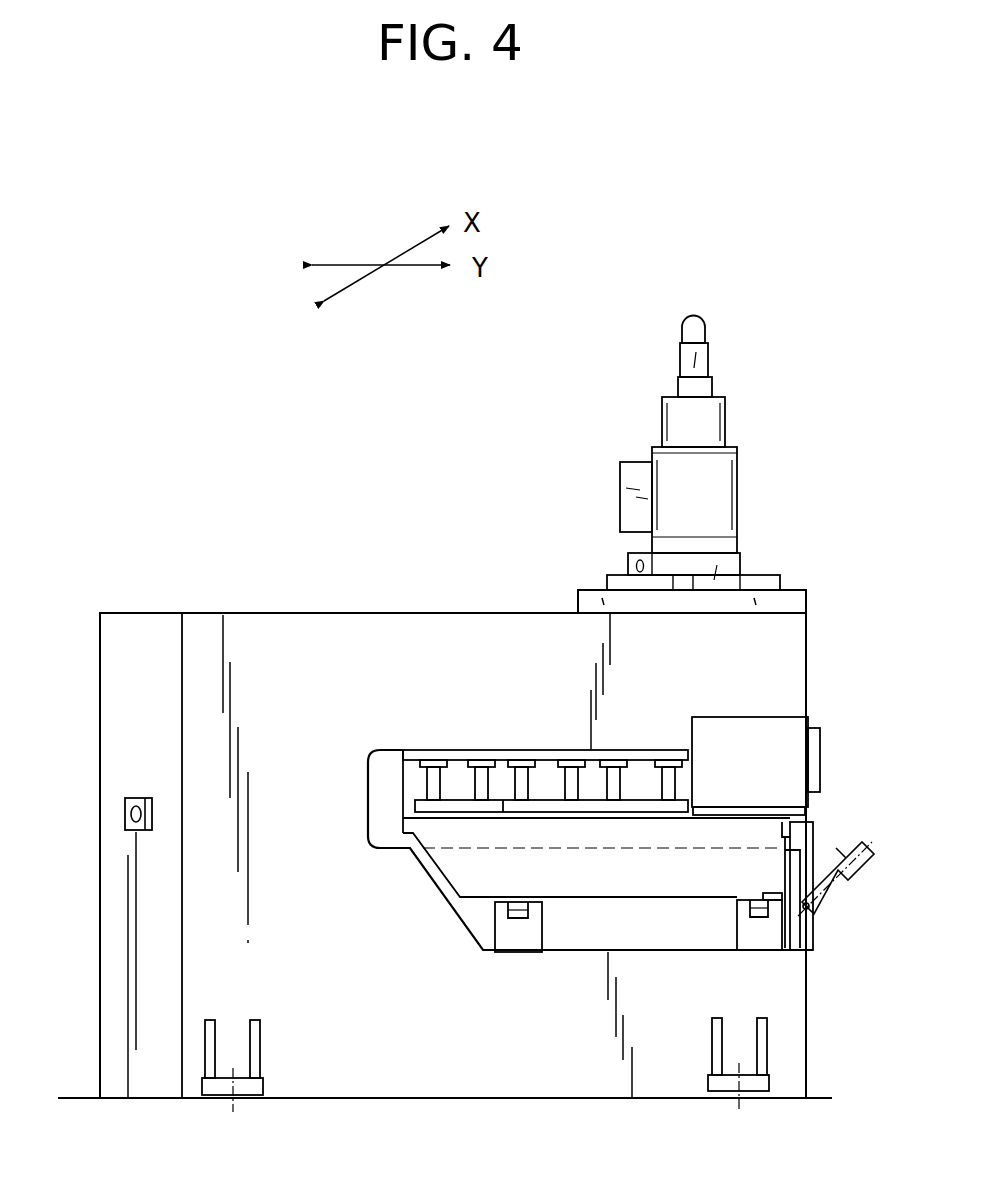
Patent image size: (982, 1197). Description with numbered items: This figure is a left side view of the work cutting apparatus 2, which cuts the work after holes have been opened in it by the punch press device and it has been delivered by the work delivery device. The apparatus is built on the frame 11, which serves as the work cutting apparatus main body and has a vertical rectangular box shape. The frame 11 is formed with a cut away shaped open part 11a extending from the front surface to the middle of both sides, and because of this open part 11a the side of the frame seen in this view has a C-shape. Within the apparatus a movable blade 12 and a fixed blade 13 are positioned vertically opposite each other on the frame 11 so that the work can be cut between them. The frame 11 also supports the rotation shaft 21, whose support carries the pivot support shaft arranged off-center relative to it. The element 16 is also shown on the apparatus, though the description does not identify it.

The work cutting apparatus 2 is at (230, 454).
The frame 11 is at (427, 612).
The open part 11a is at (388, 758).
The movable blade 12 is at (548, 805).
The fixed blade 13 is at (814, 832).
The motor 16 is at (710, 490).
The rotation shaft 21 is at (125, 816).